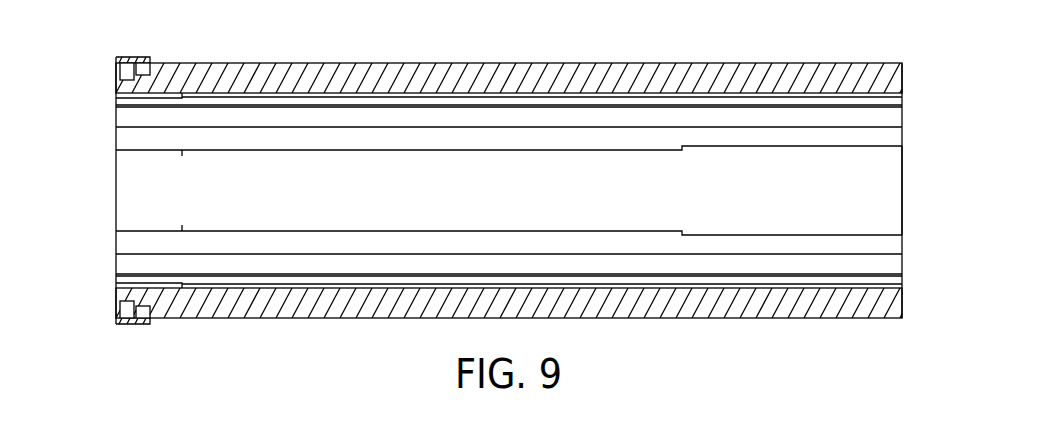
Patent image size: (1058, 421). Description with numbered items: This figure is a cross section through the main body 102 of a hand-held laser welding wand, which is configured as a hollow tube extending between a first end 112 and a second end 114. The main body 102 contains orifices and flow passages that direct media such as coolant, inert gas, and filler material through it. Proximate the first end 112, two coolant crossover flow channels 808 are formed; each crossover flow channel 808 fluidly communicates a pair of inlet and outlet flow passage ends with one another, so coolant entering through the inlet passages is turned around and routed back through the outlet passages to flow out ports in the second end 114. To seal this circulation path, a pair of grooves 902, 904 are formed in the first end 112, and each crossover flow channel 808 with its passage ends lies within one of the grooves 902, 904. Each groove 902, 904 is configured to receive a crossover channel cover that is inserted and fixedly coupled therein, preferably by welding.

The main body 102 is at (499, 62).
The first end 112 is at (117, 297).
The second end 114 is at (903, 75).
The coolant crossover flow channel 808 is at (144, 70).
The groove 902 is at (123, 74).
The groove 904 is at (122, 310).